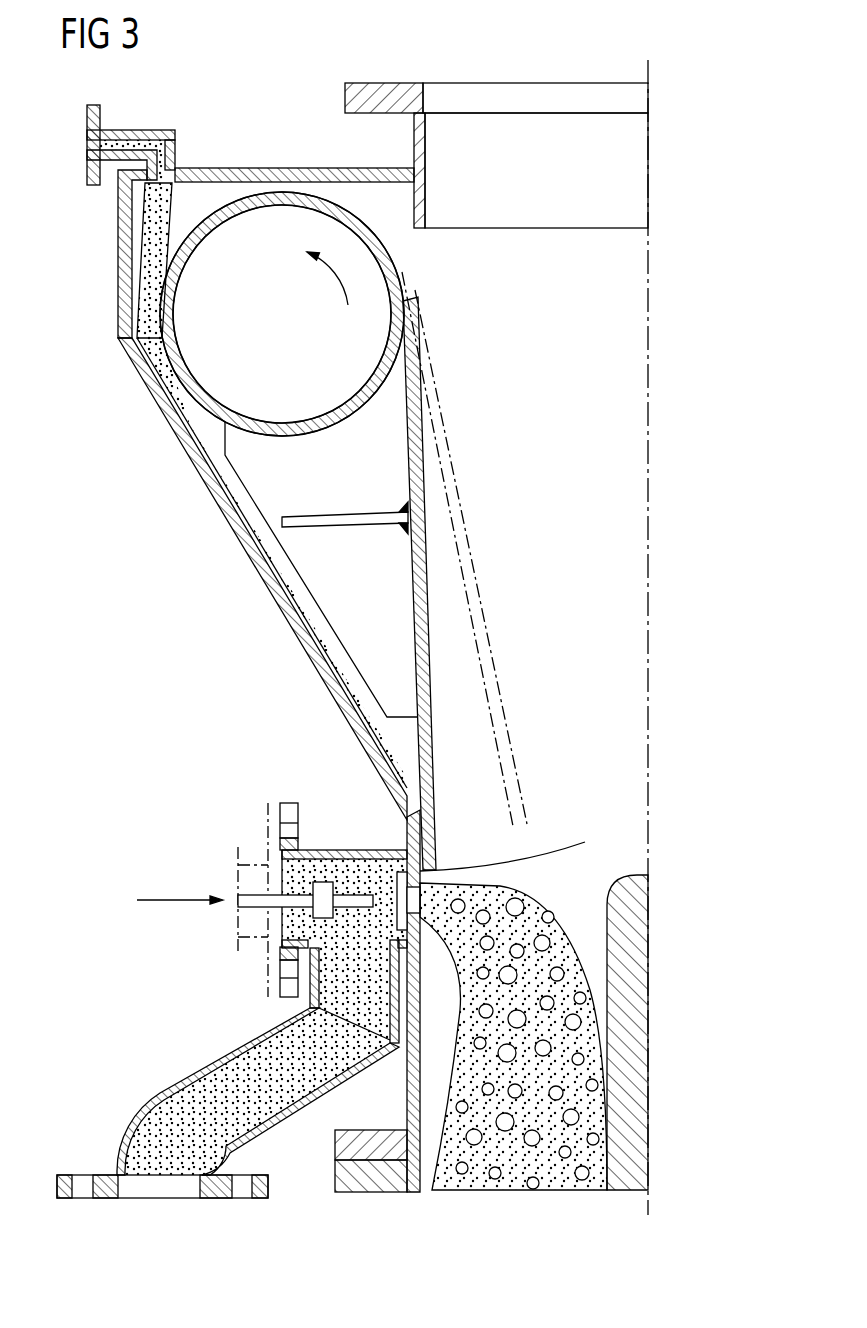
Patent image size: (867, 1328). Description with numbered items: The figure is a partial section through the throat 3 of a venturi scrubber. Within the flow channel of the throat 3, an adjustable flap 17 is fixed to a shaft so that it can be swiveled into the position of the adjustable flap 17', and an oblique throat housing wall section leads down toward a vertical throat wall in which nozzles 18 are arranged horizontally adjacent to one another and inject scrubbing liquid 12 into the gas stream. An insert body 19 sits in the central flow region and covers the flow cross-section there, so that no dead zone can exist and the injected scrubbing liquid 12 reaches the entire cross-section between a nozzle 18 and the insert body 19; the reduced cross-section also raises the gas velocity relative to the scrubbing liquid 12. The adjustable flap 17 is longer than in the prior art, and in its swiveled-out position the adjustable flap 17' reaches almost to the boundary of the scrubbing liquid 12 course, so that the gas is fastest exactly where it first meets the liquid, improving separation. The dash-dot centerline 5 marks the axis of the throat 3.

The throat 3 is at (718, 104).
The axis of rotation 5 is at (649, 281).
The scrubbing liquid 12 is at (263, 1102).
The adjustable flap 17 is at (396, 583).
The adjustable flap in swiveled-out position 17' is at (471, 549).
The nozzles 18 is at (398, 898).
The insert body 19 is at (638, 1018).